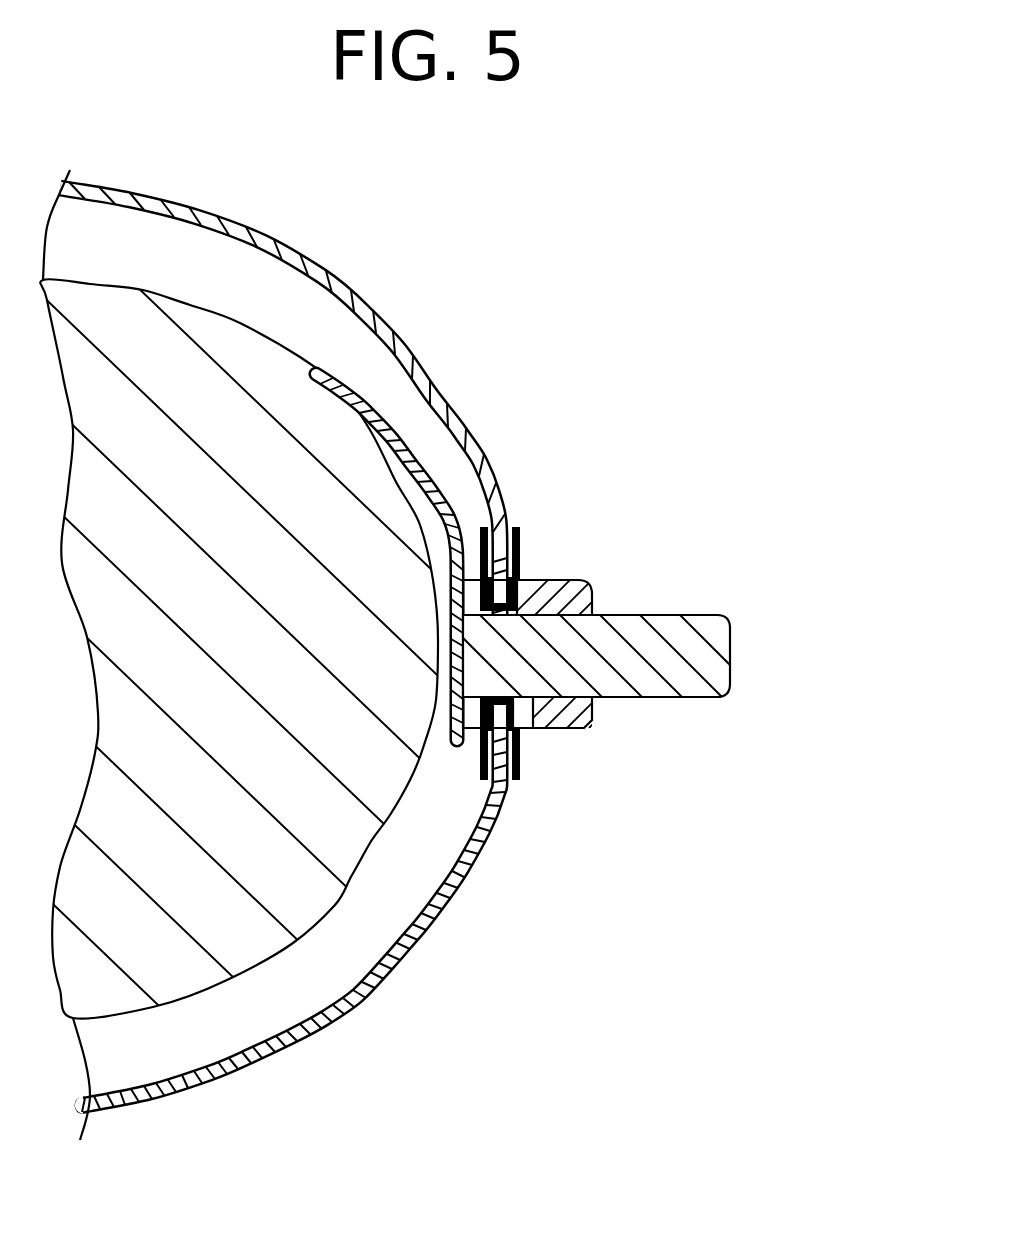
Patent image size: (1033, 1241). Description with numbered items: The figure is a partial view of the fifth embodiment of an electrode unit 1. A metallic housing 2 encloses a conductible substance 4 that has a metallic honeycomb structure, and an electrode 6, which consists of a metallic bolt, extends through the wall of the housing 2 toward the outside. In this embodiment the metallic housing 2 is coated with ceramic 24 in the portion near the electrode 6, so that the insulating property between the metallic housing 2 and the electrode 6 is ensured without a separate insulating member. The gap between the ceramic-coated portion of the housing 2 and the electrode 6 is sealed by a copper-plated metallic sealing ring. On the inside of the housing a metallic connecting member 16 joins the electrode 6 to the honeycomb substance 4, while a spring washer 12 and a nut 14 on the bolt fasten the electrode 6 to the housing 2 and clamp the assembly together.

The electrode unit 1 is at (750, 585).
The metallic housing 2 is at (458, 893).
The conductible substance having a metallic honeycomb structure 4 is at (320, 890).
The electrode 6 is at (675, 632).
The spring washer 12 is at (520, 713).
The nut 14 is at (570, 713).
The metallic connecting member 16 is at (418, 462).
The ceramic 24 is at (518, 545).